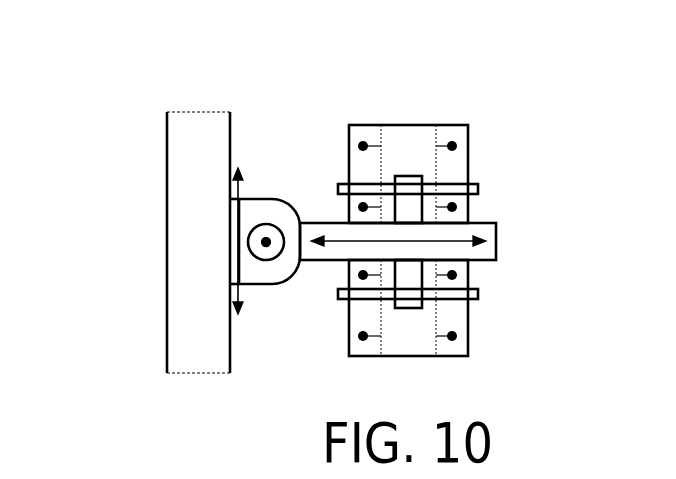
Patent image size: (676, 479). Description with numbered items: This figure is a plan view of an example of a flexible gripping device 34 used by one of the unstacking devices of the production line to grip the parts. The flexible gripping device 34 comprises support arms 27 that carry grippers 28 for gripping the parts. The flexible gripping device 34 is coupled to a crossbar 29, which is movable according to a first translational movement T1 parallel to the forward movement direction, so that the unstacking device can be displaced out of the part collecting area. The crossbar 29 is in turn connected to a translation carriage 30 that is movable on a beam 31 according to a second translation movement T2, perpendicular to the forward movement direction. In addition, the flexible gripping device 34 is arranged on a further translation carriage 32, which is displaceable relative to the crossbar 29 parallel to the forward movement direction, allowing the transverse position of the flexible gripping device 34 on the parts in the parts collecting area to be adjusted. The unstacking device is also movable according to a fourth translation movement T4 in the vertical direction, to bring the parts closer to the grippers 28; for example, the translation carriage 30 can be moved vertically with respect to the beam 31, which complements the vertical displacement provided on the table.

The support arm 27 is at (379, 184).
The gripper 28 is at (358, 340).
The crossbar 29 is at (478, 248).
The translation carriage 30 is at (278, 270).
The beam 31 is at (198, 167).
The further translation carriage 32 is at (410, 194).
The flexible gripping device 34 is at (493, 154).
The first translational movement T1 is at (437, 242).
The second translation movement T2 is at (232, 222).
The fourth translation movement T4 is at (267, 227).